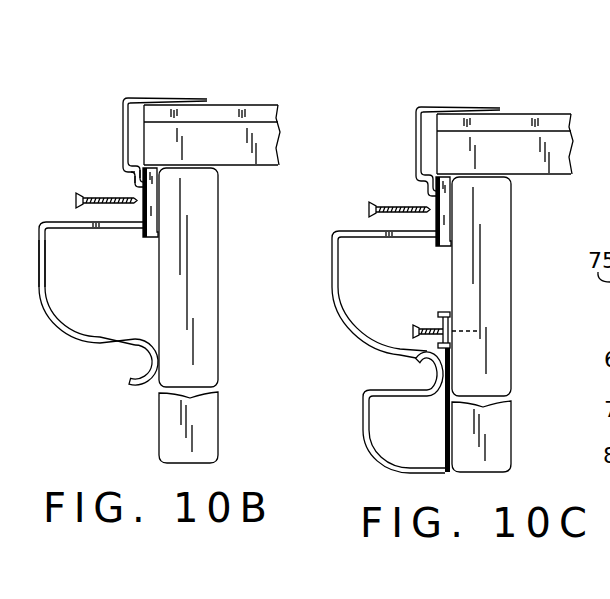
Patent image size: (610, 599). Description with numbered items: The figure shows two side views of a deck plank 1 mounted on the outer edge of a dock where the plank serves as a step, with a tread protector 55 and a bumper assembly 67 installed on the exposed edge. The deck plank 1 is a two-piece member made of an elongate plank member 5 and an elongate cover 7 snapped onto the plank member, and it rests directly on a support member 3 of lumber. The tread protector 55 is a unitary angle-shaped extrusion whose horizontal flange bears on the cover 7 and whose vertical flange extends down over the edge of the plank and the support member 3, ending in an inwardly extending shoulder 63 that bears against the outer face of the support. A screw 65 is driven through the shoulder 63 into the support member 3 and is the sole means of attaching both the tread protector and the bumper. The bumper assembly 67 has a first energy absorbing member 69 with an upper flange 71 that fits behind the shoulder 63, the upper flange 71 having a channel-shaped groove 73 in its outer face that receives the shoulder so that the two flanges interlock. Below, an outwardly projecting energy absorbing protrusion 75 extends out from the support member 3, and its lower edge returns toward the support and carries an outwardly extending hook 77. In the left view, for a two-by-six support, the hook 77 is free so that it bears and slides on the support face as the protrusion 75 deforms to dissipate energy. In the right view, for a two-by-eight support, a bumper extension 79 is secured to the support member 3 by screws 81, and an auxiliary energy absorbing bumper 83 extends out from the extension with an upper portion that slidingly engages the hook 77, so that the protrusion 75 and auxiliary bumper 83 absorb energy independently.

In FIG. 10B, the deck plank 1 is at (14, 79).
In FIG. 10C, the deck plank 1 is at (588, 120).
In FIG. 10B, the support member 3 is at (221, 309).
In FIG. 10C, the support member 3 is at (518, 332).
In FIG. 10B, the plank member 5 is at (254, 175).
In FIG. 10C, the plank member 5 is at (546, 182).
In FIG. 10B, the cover 7 is at (228, 101).
In FIG. 10C, the cover 7 is at (513, 110).
In FIG. 10B, the tread protector 55 is at (147, 94).
In FIG. 10C, the tread protector 55 is at (451, 101).
In FIG. 10B, the shoulder 63 is at (143, 197).
In FIG. 10B, the screw 65 is at (75, 200).
In FIG. 10C, the screw 65 is at (366, 209).
In FIG. 10B, the bumper assembly 67 is at (92, 350).
In FIG. 10C, the bumper assembly 67 is at (349, 342).
In FIG. 10B, the first energy absorbing member 69 is at (53, 318).
In FIG. 10B, the upper flange 71 is at (150, 175).
In FIG. 10B, the channel-shaped groove 73 is at (157, 202).
In FIG. 10B, the energy absorbing protrusion 75 is at (150, 343).
In FIG. 10C, the hook 77 is at (389, 465).
In FIG. 10C, the bumper extension 79 is at (427, 320).
In FIG. 10C, the screws 81 is at (446, 424).
In FIG. 10C, the auxiliary energy absorbing bumper 83 is at (371, 438).